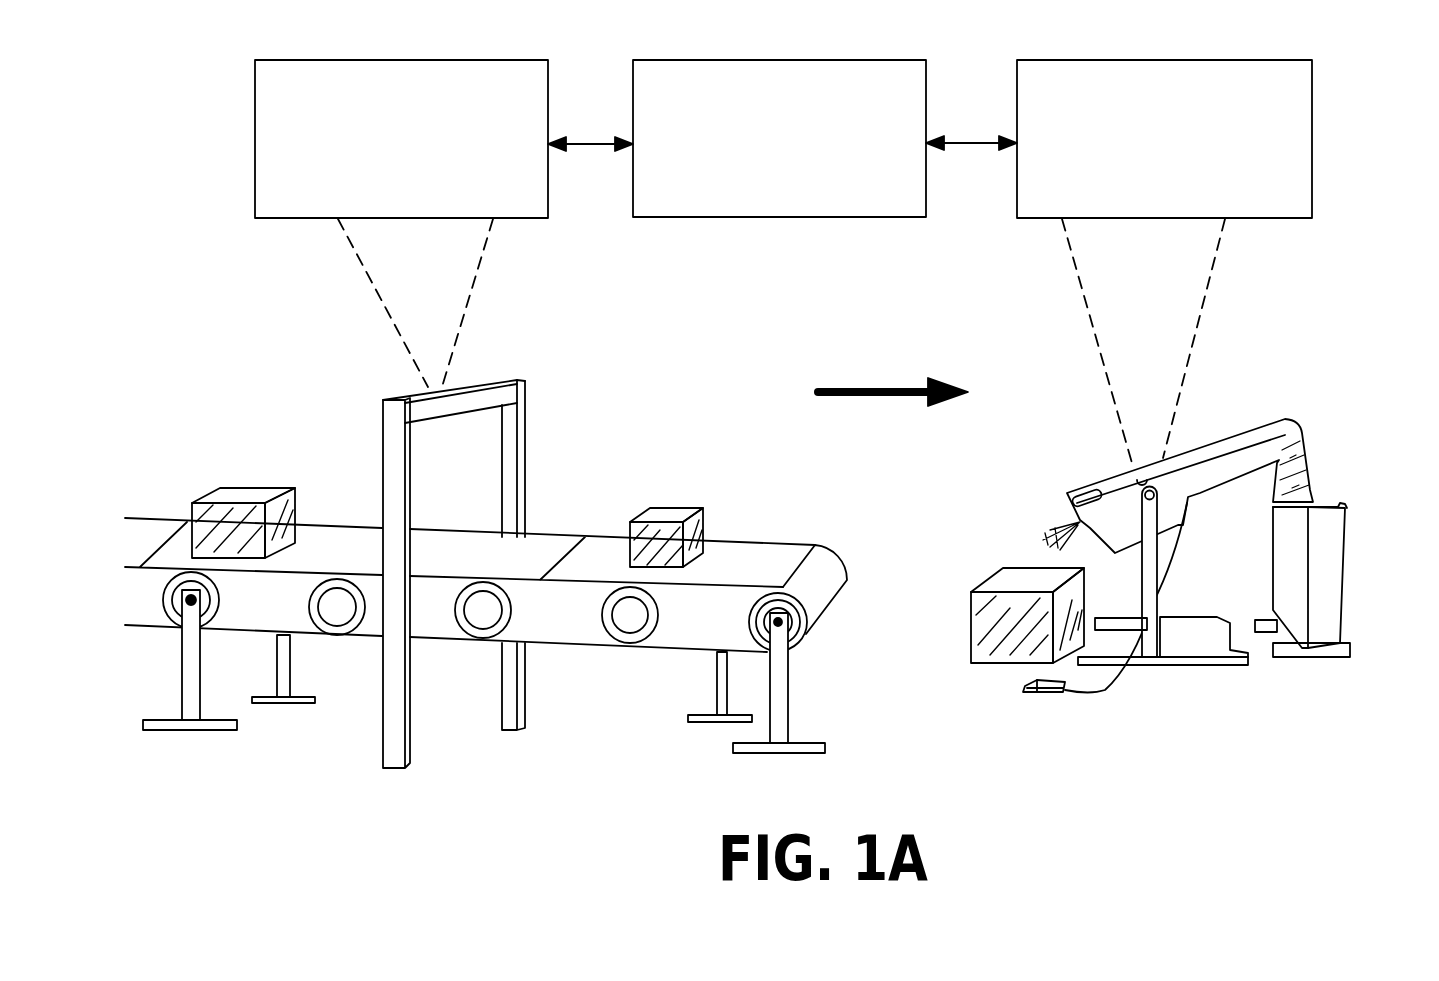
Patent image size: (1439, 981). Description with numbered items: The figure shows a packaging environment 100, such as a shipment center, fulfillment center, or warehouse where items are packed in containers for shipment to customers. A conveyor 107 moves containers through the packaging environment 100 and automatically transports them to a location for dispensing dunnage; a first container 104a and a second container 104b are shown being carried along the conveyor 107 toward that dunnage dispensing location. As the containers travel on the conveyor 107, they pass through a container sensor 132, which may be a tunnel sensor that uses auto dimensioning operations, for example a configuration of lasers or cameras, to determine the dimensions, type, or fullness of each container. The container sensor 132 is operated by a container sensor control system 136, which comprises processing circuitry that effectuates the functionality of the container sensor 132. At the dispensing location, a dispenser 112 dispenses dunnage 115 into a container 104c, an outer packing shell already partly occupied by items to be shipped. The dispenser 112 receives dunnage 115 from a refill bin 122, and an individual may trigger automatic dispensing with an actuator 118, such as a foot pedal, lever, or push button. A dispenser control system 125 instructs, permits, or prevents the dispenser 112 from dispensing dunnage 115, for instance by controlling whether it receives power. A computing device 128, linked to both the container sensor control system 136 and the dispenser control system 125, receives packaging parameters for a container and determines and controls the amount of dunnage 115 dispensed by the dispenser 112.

The packaging environment 100 is at (1264, 794).
The first container 104a is at (227, 487).
The second container 104b is at (648, 507).
The container 104c is at (1018, 568).
The conveyor 107 is at (787, 542).
The dispenser 112 is at (1222, 428).
The dunnage 115 is at (1043, 533).
The actuator 118 is at (1042, 693).
The refill bin 122 is at (1347, 570).
The dispenser control system 125 is at (1300, 150).
The computing device 128 is at (779, 138).
The container sensor 132 is at (490, 385).
The container sensor control system 136 is at (455, 164).